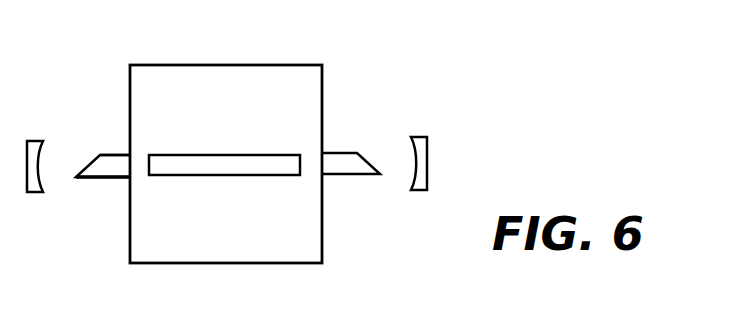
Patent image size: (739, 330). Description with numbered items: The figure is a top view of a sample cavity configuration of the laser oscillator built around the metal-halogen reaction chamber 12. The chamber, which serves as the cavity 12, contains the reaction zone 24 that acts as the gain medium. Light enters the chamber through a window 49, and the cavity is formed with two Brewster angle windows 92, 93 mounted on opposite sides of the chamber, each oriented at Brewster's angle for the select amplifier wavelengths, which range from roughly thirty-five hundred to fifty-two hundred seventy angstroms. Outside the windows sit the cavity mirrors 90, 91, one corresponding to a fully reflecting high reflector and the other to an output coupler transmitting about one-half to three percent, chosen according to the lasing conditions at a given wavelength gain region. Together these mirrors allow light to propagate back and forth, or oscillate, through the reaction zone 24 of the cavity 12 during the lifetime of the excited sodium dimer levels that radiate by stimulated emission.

The reaction chamber 12 is at (233, 227).
The reaction zone 24 is at (205, 160).
The window 49 is at (117, 153).
The cavity mirror 90 is at (35, 140).
The cavity mirror 91 is at (418, 137).
The Brewster angle window 92 is at (80, 178).
The Brewster angle window 93 is at (378, 177).